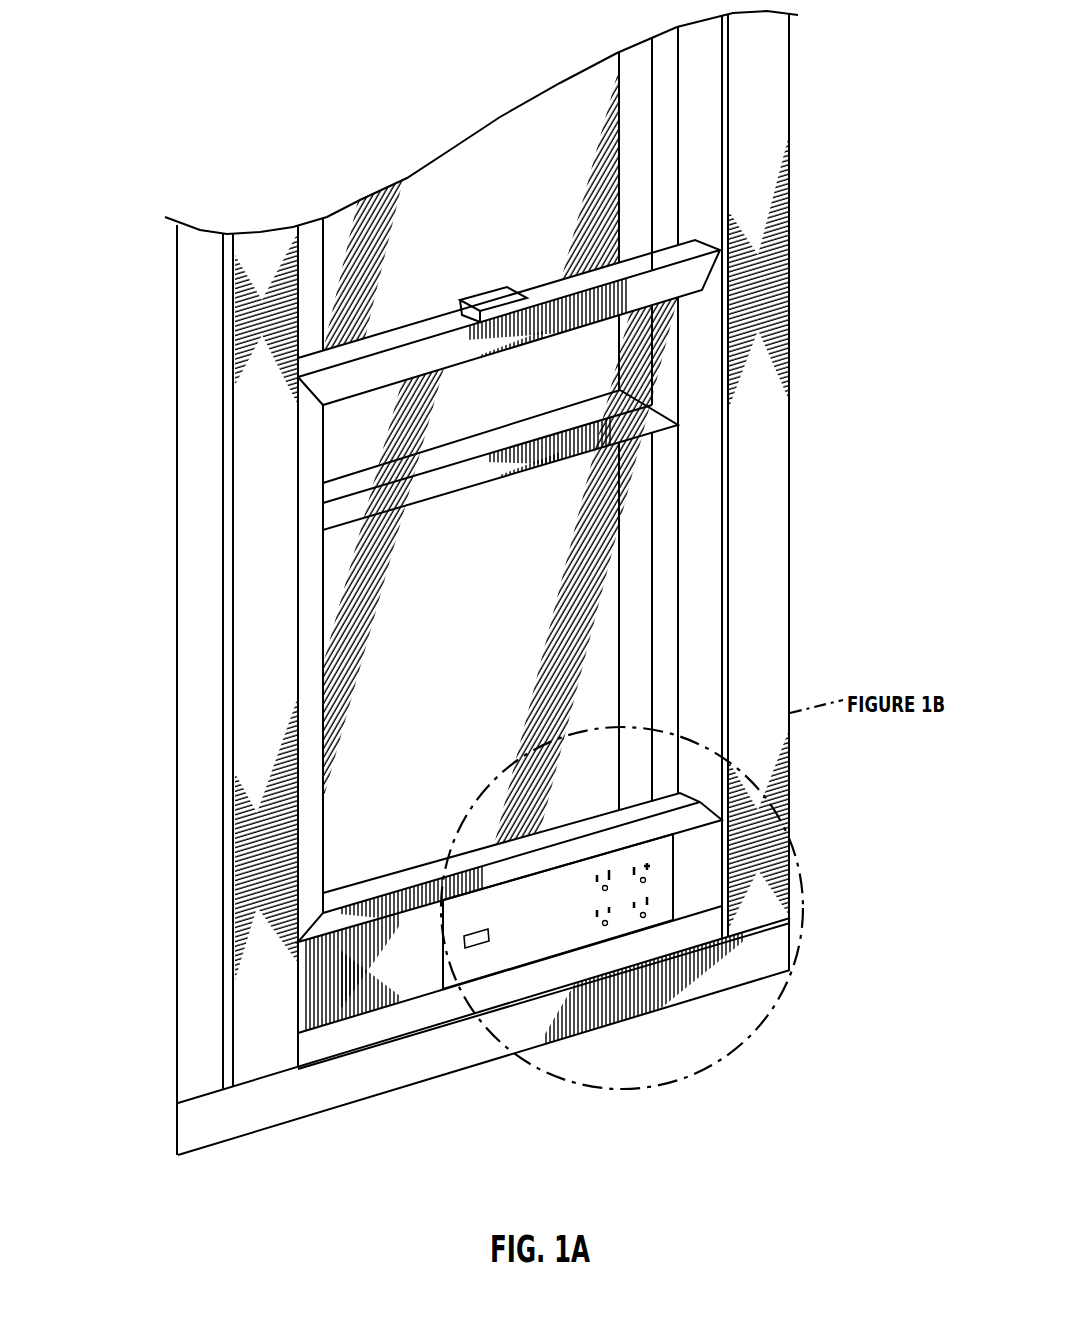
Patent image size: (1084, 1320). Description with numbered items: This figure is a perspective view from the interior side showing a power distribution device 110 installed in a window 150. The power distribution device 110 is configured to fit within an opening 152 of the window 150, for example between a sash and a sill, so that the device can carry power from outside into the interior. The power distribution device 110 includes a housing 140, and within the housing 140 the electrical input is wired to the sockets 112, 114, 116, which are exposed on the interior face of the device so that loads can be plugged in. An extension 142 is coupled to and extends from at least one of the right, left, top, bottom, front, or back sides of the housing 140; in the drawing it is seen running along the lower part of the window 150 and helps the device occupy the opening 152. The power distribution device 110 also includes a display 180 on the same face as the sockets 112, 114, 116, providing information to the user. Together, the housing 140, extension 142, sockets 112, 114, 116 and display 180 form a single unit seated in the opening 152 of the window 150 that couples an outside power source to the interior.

The window 150 is at (148, 591).
The opening 152 is at (298, 965).
The extension 142 is at (332, 990).
The power distribution device 110 is at (682, 899).
The socket 112 is at (610, 914).
The socket 114 is at (645, 906).
The socket 116 is at (645, 866).
The housing 140 is at (579, 900).
The display 180 is at (477, 942).